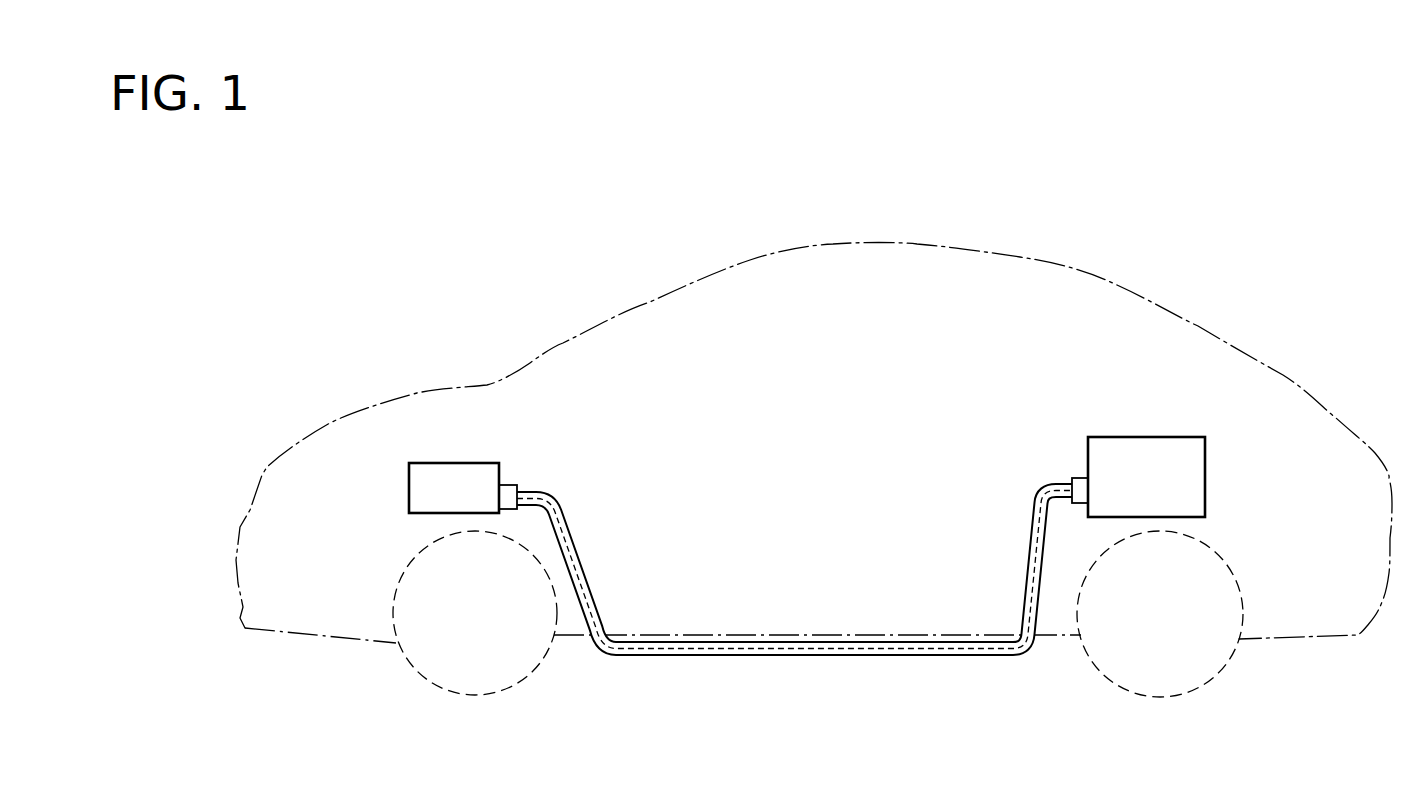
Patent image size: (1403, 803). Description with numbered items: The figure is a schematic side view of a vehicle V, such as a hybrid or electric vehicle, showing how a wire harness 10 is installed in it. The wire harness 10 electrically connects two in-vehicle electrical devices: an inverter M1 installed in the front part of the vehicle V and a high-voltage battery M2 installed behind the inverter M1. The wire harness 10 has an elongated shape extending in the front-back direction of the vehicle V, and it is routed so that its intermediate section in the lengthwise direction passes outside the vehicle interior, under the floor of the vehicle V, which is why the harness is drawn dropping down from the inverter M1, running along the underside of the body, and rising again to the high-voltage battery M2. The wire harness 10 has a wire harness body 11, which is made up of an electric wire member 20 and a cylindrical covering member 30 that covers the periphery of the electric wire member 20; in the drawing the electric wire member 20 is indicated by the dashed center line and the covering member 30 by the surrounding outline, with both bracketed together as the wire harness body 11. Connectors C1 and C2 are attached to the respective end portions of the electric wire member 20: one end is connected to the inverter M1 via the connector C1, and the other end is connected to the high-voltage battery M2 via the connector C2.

The vehicle V is at (1117, 285).
The wire harness 10 is at (793, 504).
The wire harness body 11 is at (794, 570).
The electric wire member 20 is at (1040, 537).
The covering member 30 is at (1034, 570).
The inverter M1 is at (460, 464).
The high-voltage battery M2 is at (1176, 437).
The connector C1 is at (509, 485).
The connector C2 is at (1080, 478).